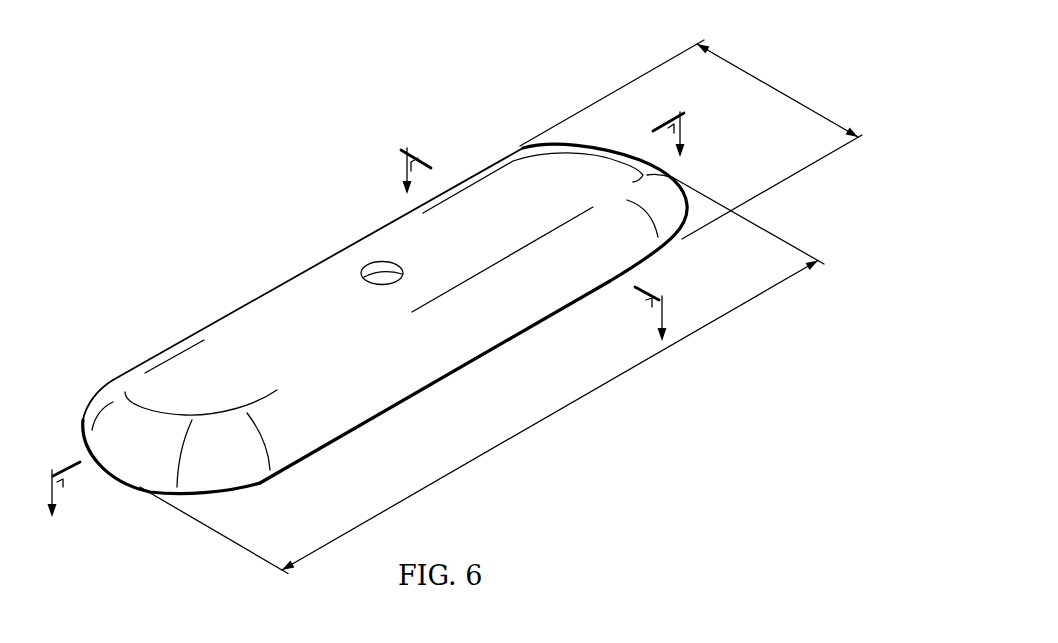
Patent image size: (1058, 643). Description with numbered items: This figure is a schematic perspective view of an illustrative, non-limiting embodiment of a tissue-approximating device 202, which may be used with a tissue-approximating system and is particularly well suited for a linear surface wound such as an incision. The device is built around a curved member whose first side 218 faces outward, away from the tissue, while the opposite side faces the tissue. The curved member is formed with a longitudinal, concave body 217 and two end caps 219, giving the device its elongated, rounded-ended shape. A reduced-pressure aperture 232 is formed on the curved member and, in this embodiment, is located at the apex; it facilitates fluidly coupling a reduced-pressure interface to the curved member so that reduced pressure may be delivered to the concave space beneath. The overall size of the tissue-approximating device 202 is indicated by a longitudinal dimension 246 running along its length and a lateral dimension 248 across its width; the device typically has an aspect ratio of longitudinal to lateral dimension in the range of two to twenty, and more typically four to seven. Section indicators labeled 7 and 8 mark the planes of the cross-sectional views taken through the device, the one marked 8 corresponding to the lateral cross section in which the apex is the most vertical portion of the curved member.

The tissue-approximating device 202 is at (385, 310).
The longitudinal, concave body 217 is at (362, 253).
The first side 218 is at (296, 293).
The end caps 219 is at (611, 146).
The reduced-pressure aperture 232 is at (400, 267).
The longitudinal dimension 246 is at (554, 416).
The lateral dimension 248 is at (770, 87).
The section line 7- 7 is at (366, 299).
The section line 8- 8 is at (534, 229).